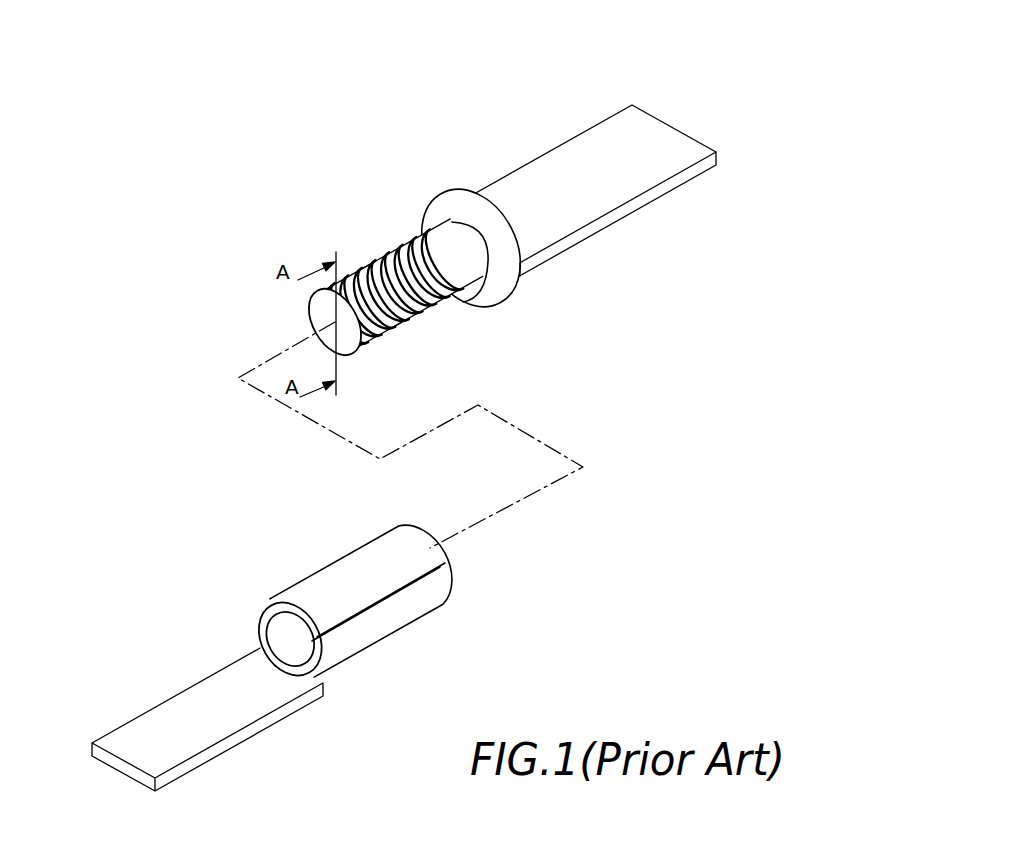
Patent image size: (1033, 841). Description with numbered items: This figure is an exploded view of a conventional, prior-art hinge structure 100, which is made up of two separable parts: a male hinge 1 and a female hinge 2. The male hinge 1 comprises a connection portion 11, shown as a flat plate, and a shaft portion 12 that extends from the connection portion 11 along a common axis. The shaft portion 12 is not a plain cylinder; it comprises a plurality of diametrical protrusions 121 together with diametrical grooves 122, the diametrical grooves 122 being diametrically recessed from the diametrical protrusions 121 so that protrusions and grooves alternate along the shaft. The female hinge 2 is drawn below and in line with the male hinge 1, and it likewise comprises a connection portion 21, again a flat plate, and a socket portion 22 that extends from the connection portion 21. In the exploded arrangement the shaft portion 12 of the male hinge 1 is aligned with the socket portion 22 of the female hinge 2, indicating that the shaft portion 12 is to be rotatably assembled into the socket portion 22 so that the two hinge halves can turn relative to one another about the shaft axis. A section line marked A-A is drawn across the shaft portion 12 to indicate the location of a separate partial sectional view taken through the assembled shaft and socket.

The hinge structure 100 is at (417, 411).
The male hinge 1 is at (544, 208).
The connection portion 11 is at (558, 165).
The shaft portion 12 is at (409, 309).
The diametrical protrusions 121 is at (410, 280).
The diametrical grooves 122 is at (385, 293).
The female hinge 2 is at (255, 648).
The connection portion 21 is at (140, 758).
The socket portion 22 is at (397, 555).